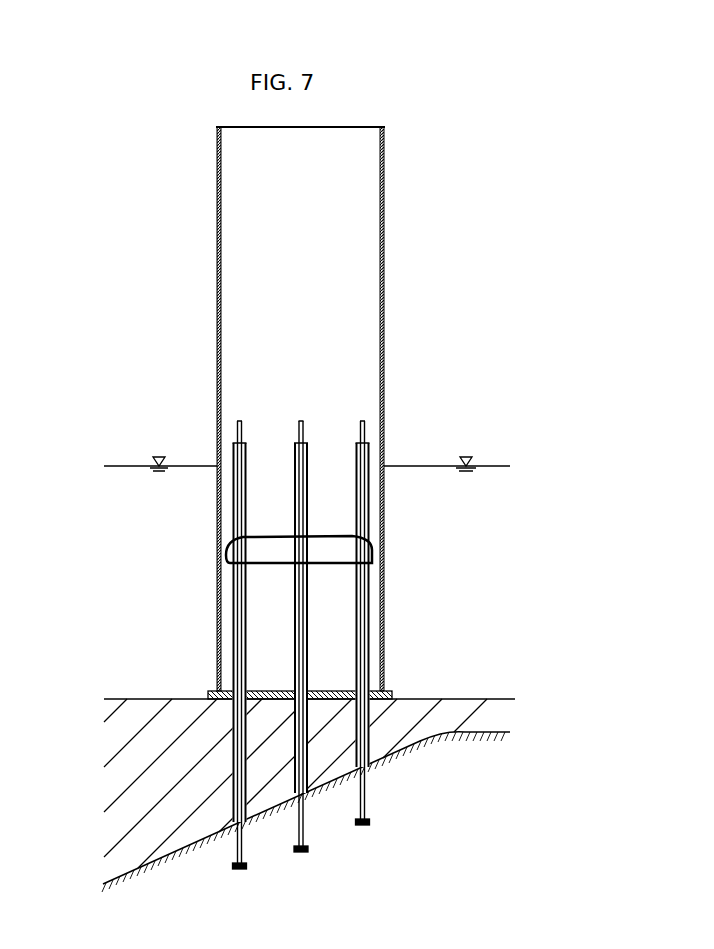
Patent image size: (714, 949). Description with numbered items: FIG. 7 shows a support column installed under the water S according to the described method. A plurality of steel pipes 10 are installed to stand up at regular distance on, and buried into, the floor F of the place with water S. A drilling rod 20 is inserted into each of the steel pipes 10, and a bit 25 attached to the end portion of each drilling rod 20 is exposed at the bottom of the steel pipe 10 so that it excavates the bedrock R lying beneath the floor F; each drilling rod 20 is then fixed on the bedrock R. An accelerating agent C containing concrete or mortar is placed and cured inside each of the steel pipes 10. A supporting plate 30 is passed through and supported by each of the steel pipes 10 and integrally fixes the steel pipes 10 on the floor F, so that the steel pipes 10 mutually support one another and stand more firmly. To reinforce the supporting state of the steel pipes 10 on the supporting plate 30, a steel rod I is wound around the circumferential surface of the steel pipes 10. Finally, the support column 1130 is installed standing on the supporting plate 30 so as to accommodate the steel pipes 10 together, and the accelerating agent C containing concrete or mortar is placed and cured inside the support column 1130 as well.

The support column 1130 is at (385, 241).
The drilling rod 20 is at (363, 420).
The steel pipe 10 is at (368, 445).
The supporting plate 30 is at (392, 690).
The bit 25 is at (370, 822).
The accelerating agent C is at (237, 316).
The water S is at (122, 465).
The steel rod I is at (228, 555).
The floor F is at (120, 698).
The bedrock R is at (158, 858).